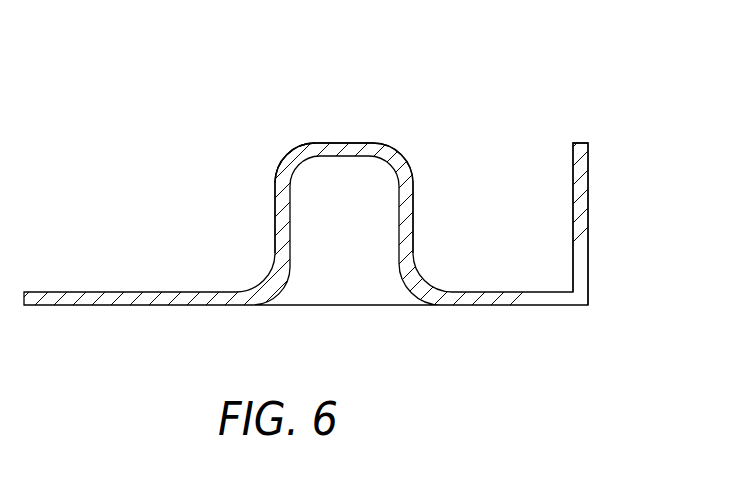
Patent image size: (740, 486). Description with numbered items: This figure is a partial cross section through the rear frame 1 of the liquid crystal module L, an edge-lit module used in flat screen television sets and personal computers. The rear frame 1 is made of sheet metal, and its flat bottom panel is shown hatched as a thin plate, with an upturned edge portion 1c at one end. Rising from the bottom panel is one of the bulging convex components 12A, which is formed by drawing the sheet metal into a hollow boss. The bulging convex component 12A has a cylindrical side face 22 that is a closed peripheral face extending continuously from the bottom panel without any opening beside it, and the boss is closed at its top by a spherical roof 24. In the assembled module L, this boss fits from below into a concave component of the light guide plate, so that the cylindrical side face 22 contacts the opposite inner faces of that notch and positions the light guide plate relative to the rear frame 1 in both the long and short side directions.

The rear frame 1 is at (140, 290).
The flange portion 1c is at (590, 163).
The bulging convex component 12A is at (363, 142).
The cylindrical side face 22 is at (413, 225).
The spherical roof 24 is at (307, 147).
The liquid crystal module L is at (491, 121).